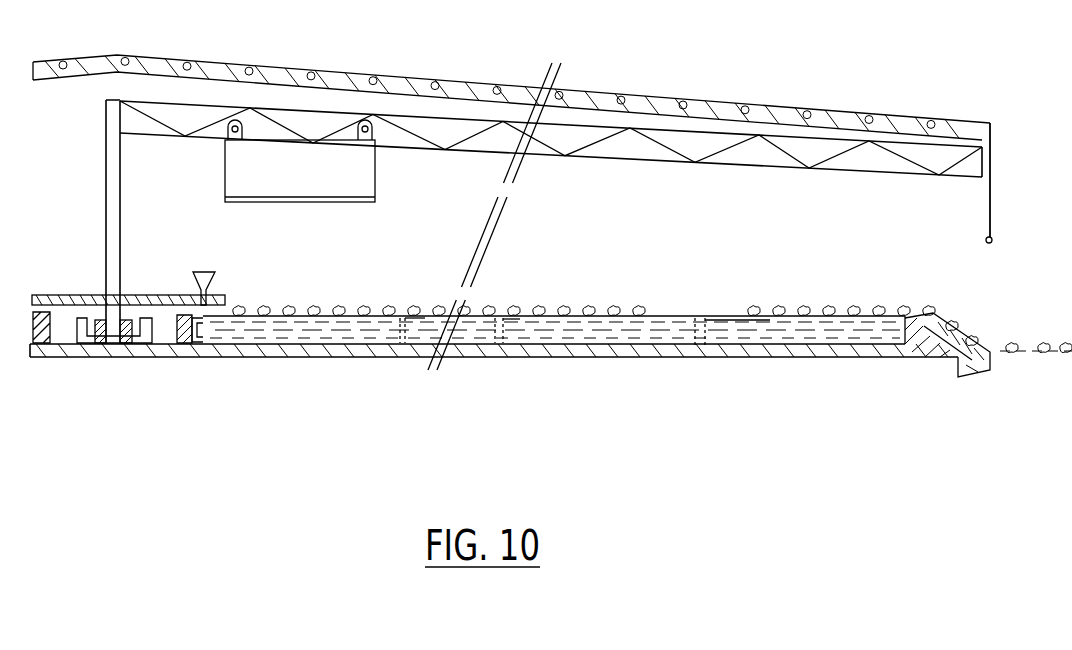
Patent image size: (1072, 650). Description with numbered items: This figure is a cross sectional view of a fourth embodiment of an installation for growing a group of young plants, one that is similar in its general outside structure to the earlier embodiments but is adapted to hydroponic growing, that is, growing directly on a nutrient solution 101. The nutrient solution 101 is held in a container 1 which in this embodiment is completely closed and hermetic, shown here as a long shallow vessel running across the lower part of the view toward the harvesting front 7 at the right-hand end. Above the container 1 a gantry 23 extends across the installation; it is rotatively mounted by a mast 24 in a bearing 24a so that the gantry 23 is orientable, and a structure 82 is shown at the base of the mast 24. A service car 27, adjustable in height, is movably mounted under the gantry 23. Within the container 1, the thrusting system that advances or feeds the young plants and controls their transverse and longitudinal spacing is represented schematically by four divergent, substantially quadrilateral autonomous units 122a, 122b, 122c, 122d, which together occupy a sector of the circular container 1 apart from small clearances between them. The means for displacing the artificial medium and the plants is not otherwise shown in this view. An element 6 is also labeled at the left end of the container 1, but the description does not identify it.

The container 1 is at (282, 356).
The end bracket 6 is at (177, 333).
The harvesting front 7 is at (930, 315).
The gantry 23 is at (300, 112).
The mast 24 is at (118, 215).
The bearing 24a is at (127, 310).
The service car 27 is at (300, 161).
The structure 82 is at (60, 300).
The nutrient solution 101 is at (353, 330).
The autonomous unit 122a is at (203, 330).
The autonomous unit 122b is at (417, 327).
The autonomous unit 122c is at (563, 318).
The autonomous unit 122d is at (770, 322).